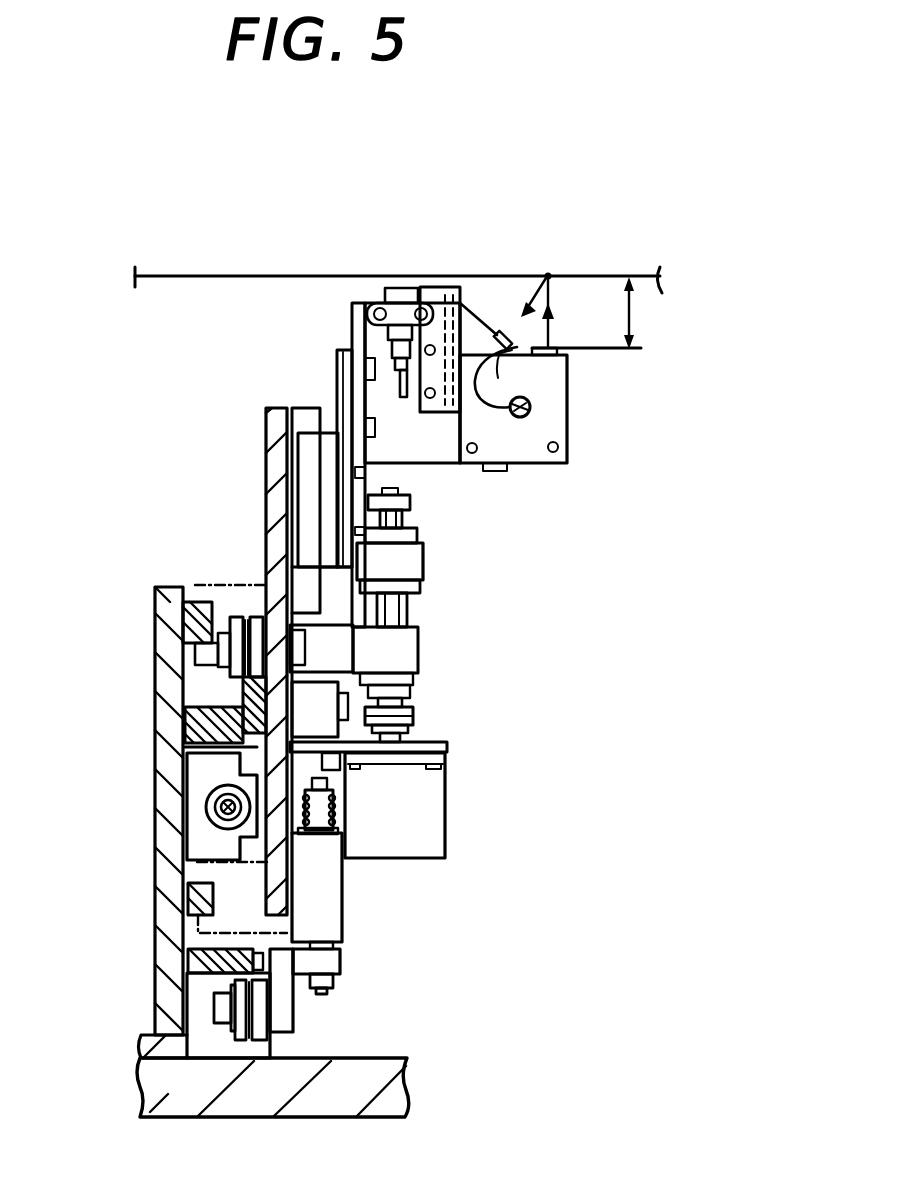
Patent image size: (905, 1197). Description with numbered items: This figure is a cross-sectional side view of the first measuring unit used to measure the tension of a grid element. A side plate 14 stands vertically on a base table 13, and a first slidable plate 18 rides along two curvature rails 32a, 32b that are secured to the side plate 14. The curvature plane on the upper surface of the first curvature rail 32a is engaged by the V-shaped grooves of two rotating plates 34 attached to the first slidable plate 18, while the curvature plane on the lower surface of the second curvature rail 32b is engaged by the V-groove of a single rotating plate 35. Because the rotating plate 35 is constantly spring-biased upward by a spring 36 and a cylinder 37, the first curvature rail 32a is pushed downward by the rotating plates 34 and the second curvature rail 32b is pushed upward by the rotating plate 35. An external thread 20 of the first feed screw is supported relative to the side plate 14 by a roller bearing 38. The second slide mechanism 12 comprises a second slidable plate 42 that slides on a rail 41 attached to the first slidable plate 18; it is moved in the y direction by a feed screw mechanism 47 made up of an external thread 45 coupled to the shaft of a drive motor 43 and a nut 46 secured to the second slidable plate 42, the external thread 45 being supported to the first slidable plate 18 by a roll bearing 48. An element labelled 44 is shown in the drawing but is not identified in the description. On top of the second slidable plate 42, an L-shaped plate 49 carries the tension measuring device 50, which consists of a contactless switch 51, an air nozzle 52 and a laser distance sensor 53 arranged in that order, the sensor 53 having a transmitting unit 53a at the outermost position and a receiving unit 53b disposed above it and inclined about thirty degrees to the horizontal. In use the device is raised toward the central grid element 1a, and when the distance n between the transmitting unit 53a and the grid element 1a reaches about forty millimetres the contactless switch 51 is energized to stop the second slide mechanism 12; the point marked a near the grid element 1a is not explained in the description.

The central grid element 1a is at (645, 277).
The distance n is at (637, 312).
The reference point a is at (549, 276).
The second slide mechanism 12 is at (440, 638).
The base table 13 is at (397, 1072).
The side plate 14 is at (168, 806).
The first slidable plate 18 is at (272, 465).
The external thread 20 is at (220, 802).
The first curvature rail 32a is at (243, 697).
The second curvature rail 32b is at (190, 965).
The rotating plates 34 is at (237, 620).
The rotating plate 35 is at (268, 1043).
The spring 36 is at (343, 807).
The cylinder 37 is at (333, 913).
The roller bearing 38 is at (193, 768).
The rail 41 is at (305, 410).
The second slidable plate 42 is at (337, 357).
The drive motor 43 is at (432, 833).
The coupling 44 is at (407, 716).
The external thread 45 is at (407, 611).
The nut 46 is at (412, 556).
The feed screw mechanism 47 is at (452, 570).
The roll bearing 48 is at (410, 655).
The L-shaped plate 49 is at (350, 312).
The tension measuring device 50 is at (588, 433).
The contactless switch 51 is at (400, 312).
The air nozzle 52 is at (456, 283).
The sensor 53 is at (540, 448).
The transmitting unit 53a is at (557, 340).
The receiving unit 53b is at (503, 333).